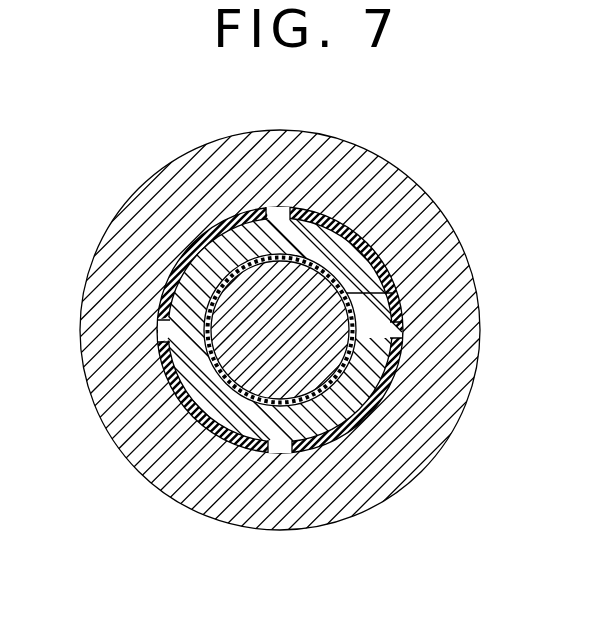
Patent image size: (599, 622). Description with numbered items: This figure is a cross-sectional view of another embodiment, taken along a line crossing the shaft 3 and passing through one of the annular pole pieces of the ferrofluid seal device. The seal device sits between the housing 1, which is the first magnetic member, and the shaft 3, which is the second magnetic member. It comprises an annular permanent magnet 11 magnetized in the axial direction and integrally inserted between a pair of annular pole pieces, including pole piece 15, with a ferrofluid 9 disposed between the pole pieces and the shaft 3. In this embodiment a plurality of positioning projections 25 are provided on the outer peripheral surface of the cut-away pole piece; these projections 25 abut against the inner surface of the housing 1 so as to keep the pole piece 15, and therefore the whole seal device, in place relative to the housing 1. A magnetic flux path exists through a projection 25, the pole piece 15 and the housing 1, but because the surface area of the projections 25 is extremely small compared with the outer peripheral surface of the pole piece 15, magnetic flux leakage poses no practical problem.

The housing 1 is at (433, 213).
The shaft 3 is at (317, 382).
The ferrofluid 9 is at (393, 287).
The annular permanent magnet 11 is at (387, 372).
The pole piece 15 is at (212, 402).
The projections 25 is at (160, 324).